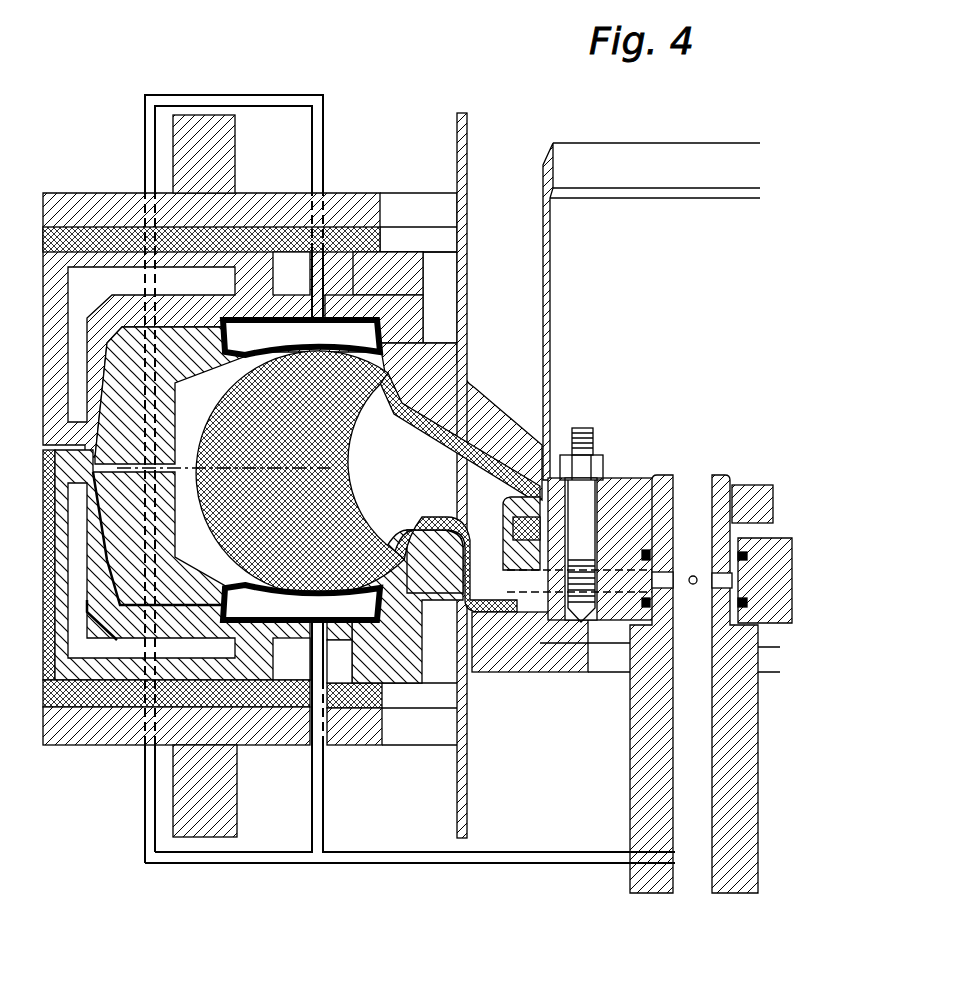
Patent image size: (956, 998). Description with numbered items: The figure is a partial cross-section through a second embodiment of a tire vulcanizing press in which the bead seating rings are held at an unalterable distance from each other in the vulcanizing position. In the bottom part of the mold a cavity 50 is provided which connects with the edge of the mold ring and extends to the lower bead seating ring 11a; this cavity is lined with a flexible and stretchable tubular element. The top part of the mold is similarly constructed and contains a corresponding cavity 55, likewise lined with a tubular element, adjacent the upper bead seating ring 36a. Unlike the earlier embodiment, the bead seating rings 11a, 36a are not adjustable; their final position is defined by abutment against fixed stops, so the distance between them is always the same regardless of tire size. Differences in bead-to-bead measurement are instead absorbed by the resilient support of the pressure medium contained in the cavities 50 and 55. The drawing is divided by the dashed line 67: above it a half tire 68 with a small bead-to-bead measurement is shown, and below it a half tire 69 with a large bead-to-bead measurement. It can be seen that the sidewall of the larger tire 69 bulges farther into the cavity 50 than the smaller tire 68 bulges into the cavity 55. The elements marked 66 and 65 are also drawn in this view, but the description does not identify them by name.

The cavity 55 is at (353, 333).
The housing block 66 is at (412, 352).
The bead seating ring 36a is at (483, 390).
The smaller tire 68 is at (182, 432).
The dashed line 67 is at (290, 466).
The larger tire 69 is at (180, 527).
The bead seating ring 11a is at (437, 555).
The lower block 65 is at (420, 610).
The cavity 50 is at (364, 603).